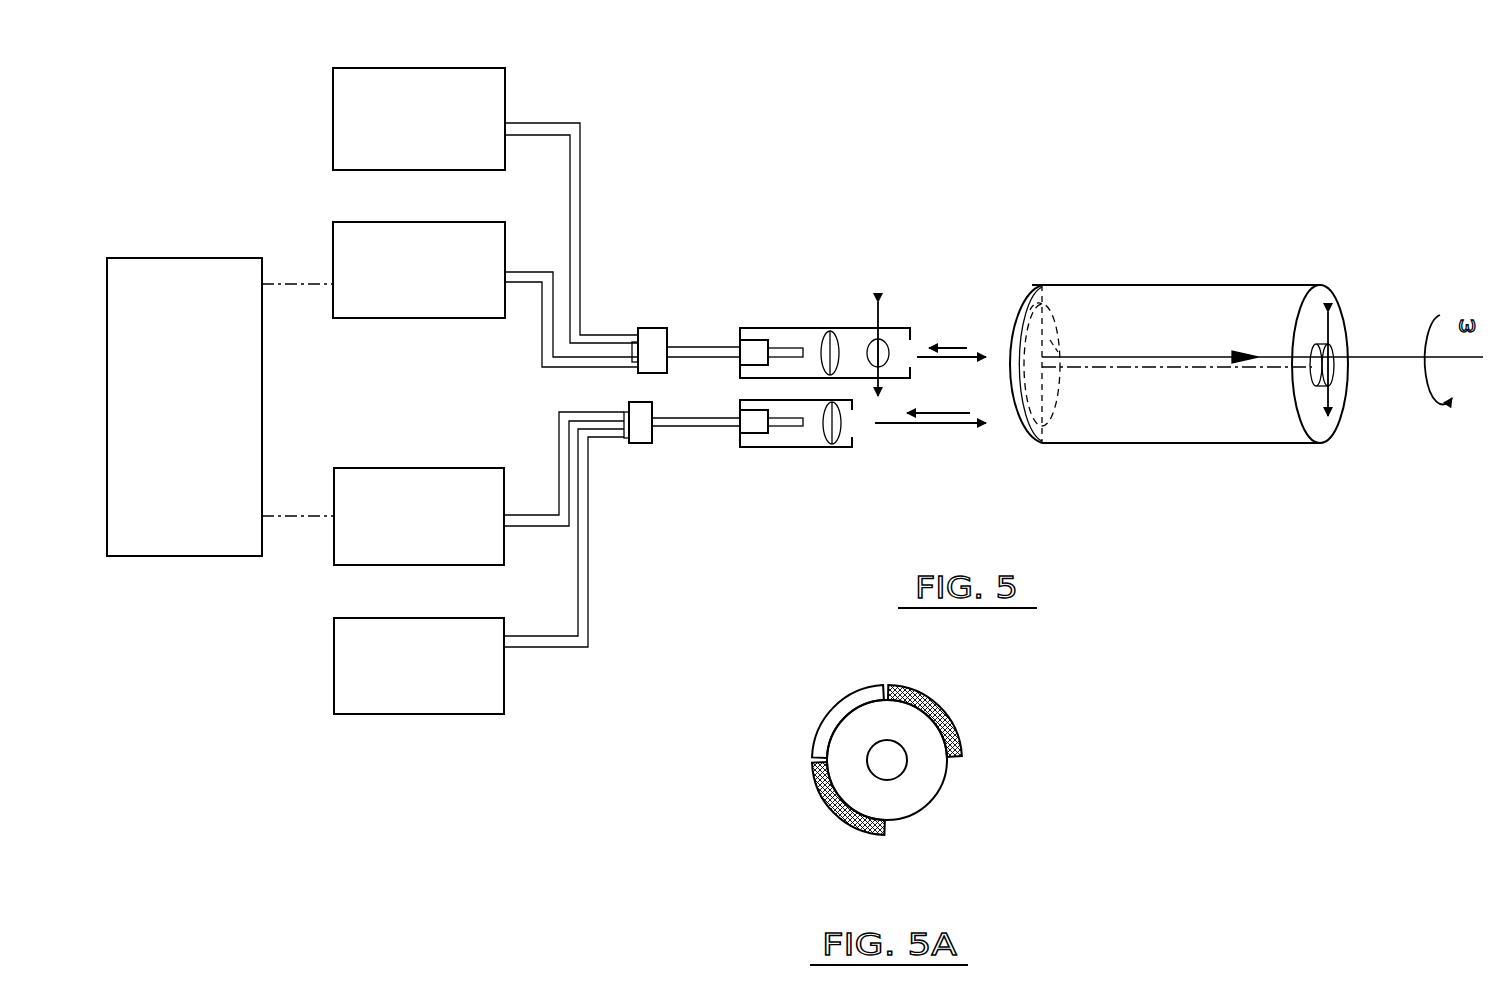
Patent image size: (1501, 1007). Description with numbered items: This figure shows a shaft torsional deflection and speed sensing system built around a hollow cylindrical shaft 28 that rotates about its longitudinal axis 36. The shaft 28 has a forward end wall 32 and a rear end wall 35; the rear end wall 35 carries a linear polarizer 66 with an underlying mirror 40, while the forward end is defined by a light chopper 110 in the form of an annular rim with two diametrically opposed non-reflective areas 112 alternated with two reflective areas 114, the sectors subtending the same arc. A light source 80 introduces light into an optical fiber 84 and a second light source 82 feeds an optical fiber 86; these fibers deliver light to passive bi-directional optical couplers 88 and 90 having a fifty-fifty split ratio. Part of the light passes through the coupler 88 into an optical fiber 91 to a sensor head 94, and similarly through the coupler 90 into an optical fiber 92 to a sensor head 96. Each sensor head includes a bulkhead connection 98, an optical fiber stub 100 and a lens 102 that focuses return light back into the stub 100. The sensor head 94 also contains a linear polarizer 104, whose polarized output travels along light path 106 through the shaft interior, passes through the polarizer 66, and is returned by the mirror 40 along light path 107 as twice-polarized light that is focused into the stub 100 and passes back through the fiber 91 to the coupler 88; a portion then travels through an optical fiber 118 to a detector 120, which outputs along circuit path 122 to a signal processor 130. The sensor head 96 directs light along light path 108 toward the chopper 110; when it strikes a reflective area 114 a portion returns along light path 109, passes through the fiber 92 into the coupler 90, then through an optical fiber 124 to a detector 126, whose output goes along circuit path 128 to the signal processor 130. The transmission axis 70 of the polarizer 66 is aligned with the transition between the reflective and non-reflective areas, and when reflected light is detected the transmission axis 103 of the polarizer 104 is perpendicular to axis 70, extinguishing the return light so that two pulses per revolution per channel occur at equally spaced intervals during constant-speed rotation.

In FIG. 5, the shaft 28 is at (1170, 445).
In FIG. 5, the forward end wall 32 is at (1041, 443).
In FIG. 5, the rear end wall 35 is at (1329, 344).
In FIG. 5, the rotation axis 36 is at (1180, 367).
In FIG. 5, the mirror 40 is at (1330, 350).
In FIG. 5, the linear polarizer 66 is at (1315, 388).
In FIG. 5, the transmission axis 70 is at (1332, 390).
In FIG. 5, the light source 80 is at (330, 118).
In FIG. 5, the light source 82 is at (331, 671).
In FIG. 5, the optical fiber 84 is at (580, 180).
In FIG. 5, the optical fiber 86 is at (590, 573).
In FIG. 5, the optical coupler 88 is at (658, 328).
In FIG. 5, the optical coupler 90 is at (637, 443).
In FIG. 5, the optical fiber 91 is at (702, 345).
In FIG. 5, the optical fiber 92 is at (680, 423).
In FIG. 5, the sensor head 94 is at (762, 328).
In FIG. 5, the sensor head 96 is at (822, 440).
In FIG. 5, the bulkhead connection 98 is at (750, 417).
In FIG. 5, the optical fiber stub 100 is at (789, 350).
In FIG. 5, the lens 102 is at (832, 330).
In FIG. 5, the transmission axis 103 is at (886, 305).
In FIG. 5, the linear polarizer 104 is at (888, 363).
In FIG. 5, the light path 106 is at (967, 350).
In FIG. 5, the light path 107 is at (948, 345).
In FIG. 5, the light path 108 is at (957, 425).
In FIG. 5, the light path 109 is at (933, 425).
In FIG. 5, the light chopper 110 is at (1037, 440).
In FIG. 5A, the light chopper 110 is at (752, 754).
In FIG. 5, the non-reflective area 112 is at (1040, 302).
In FIG. 5A, the non-reflective area 112 is at (952, 720).
In FIG. 5, the reflective area 114 is at (1050, 348).
In FIG. 5A, the reflective area 114 is at (835, 708).
In FIG. 5, the optical fiber 118 is at (540, 330).
In FIG. 5, the detector 120 is at (330, 232).
In FIG. 5, the circuit path 122 is at (290, 287).
In FIG. 5, the optical fiber 124 is at (557, 479).
In FIG. 5, the detector 126 is at (417, 467).
In FIG. 5, the circuit path 128 is at (292, 512).
In FIG. 5, the signal processor 130 is at (200, 258).